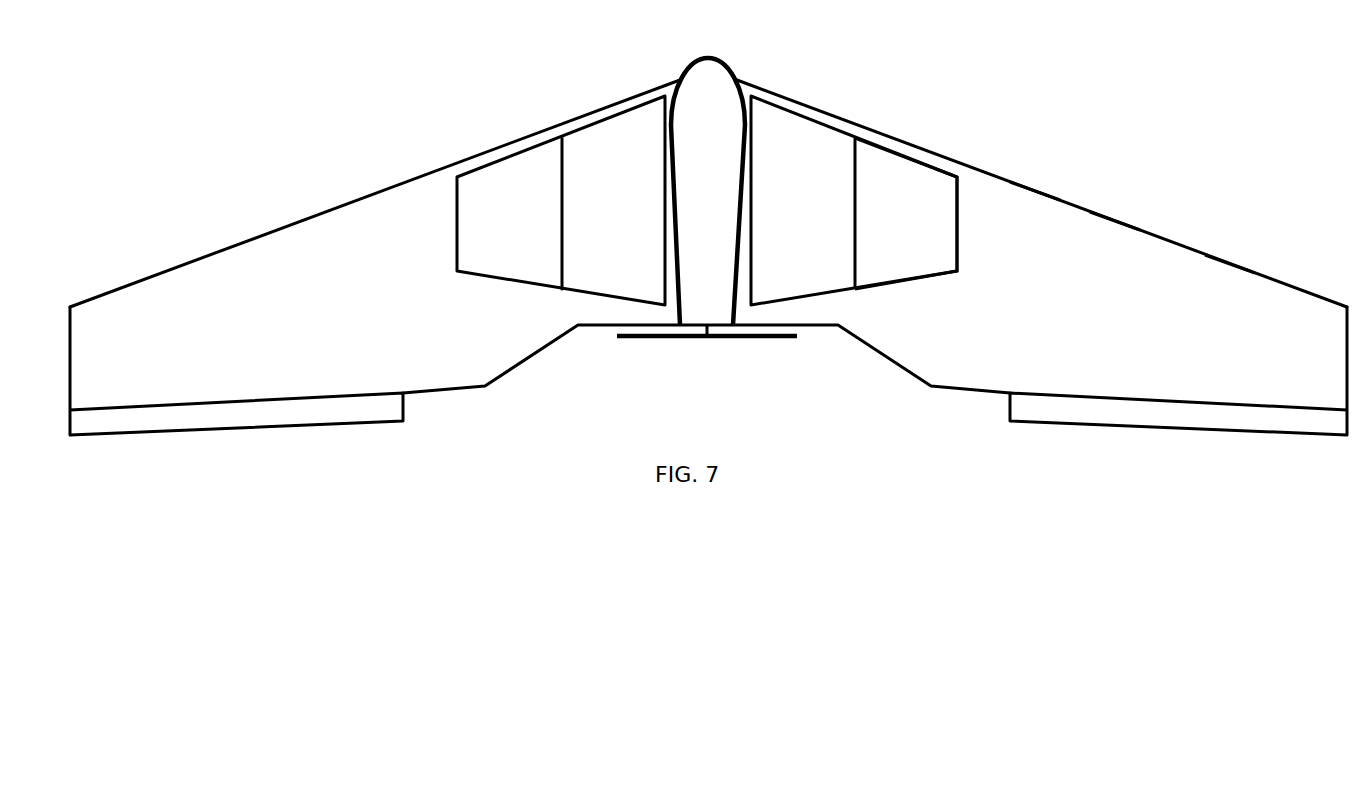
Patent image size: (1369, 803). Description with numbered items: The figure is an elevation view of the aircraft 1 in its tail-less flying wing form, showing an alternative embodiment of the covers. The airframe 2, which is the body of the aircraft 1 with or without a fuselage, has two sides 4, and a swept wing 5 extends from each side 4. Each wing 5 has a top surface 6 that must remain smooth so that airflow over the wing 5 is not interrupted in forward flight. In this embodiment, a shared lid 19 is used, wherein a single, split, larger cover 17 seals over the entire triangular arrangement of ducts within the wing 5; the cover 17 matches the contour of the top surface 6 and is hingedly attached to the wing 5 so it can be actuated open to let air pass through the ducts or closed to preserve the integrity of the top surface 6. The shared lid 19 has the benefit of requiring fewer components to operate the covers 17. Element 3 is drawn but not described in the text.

The aircraft 1 is at (353, 201).
The airframe 2 is at (702, 100).
The center mounting bar 3 is at (753, 338).
The side 4 is at (1104, 240).
The wing 5 is at (1218, 280).
The top surface 6 is at (1024, 206).
The cover 17 is at (923, 172).
The shared lid 19 is at (803, 146).